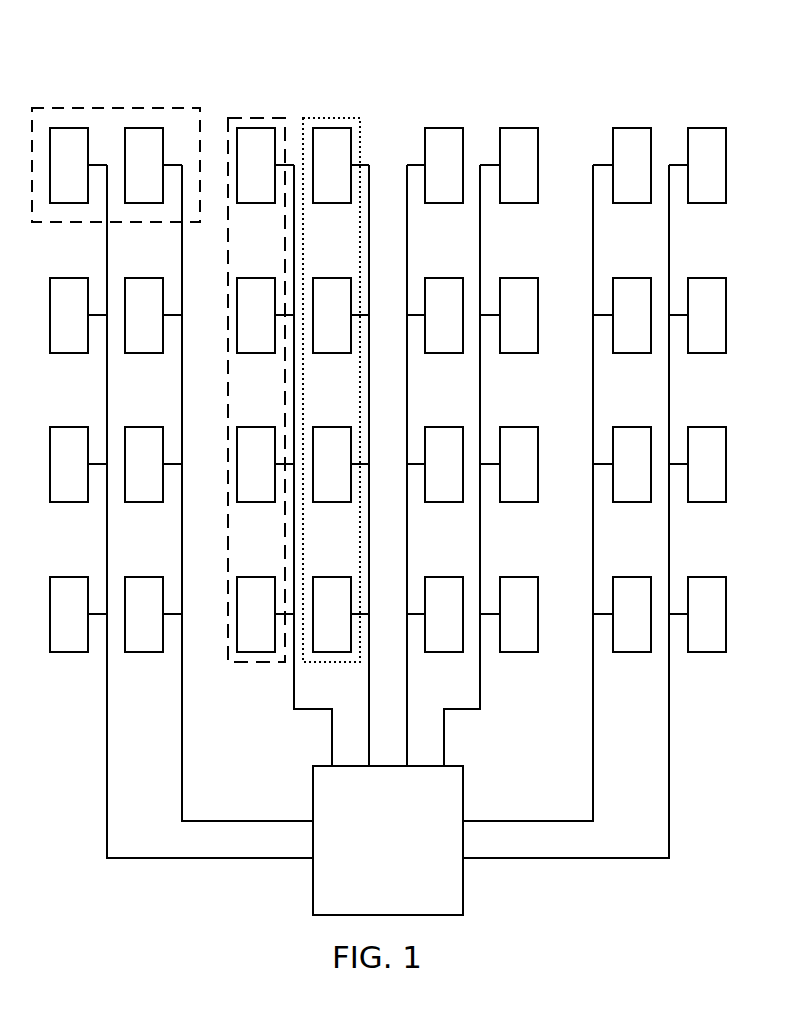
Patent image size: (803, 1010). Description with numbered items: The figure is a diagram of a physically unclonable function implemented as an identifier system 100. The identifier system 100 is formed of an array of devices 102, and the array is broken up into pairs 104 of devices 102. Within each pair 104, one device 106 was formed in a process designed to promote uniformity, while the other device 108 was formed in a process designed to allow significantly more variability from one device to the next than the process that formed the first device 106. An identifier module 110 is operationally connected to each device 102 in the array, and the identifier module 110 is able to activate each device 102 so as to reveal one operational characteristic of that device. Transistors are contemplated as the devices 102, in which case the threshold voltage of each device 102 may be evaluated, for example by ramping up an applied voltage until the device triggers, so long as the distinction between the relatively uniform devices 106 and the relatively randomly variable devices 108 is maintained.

The identifier system 100 is at (632, 96).
The device 102 is at (517, 128).
The pair of devices 104 is at (103, 108).
The device formed in a uniformity-promoting process 106 is at (255, 118).
The device formed in a variability-allowing process 108 is at (328, 118).
The identifier module 110 is at (369, 881).